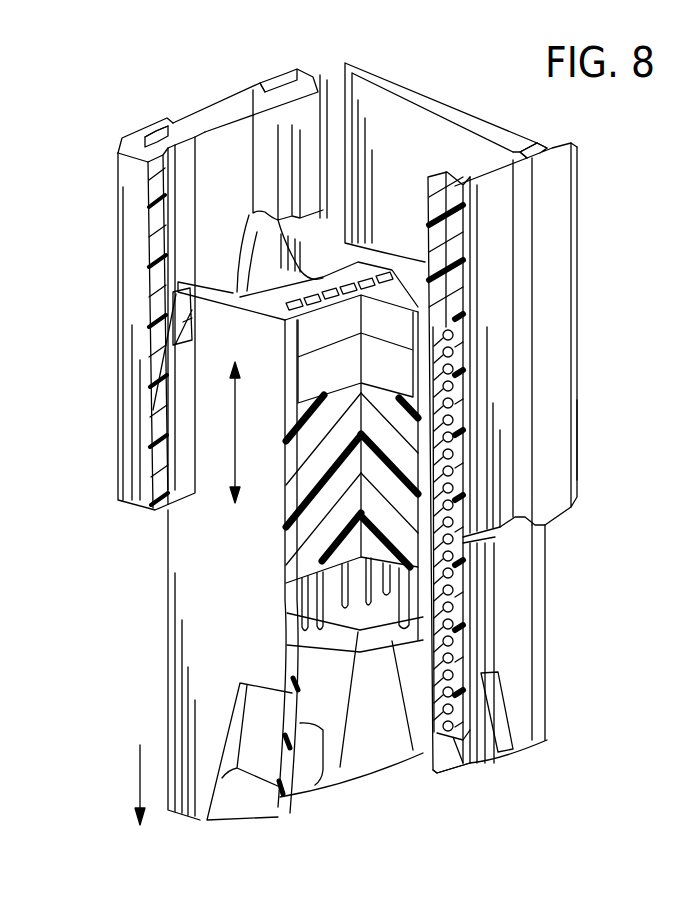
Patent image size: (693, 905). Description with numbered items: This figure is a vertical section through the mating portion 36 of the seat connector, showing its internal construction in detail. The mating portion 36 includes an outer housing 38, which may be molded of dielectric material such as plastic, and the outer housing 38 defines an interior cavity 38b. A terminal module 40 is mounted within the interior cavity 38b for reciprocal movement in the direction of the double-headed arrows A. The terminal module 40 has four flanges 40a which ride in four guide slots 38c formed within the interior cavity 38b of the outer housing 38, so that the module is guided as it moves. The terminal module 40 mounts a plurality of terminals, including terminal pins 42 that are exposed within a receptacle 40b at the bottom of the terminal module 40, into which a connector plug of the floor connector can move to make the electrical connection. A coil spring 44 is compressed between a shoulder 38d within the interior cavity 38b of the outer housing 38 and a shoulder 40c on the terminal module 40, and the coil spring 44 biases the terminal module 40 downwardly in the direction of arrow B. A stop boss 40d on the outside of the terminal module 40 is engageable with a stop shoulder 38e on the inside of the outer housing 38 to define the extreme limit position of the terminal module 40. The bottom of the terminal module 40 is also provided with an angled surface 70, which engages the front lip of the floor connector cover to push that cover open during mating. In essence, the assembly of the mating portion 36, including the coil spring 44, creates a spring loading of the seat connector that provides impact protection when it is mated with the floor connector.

The mating portion 36 is at (597, 462).
The outer housing 38 is at (550, 262).
The interior cavity 38b is at (412, 140).
The guide slots 38c is at (287, 98).
The shoulder 38d is at (460, 373).
The stop shoulder 38e is at (155, 375).
The terminal module 40 is at (207, 548).
The flanges 40a is at (180, 286).
The receptacle 40b is at (323, 730).
The shoulder 40c is at (460, 712).
The stop boss 40d is at (193, 317).
The terminal pins 42 is at (440, 628).
The coil spring 44 is at (460, 573).
The angled surface 70 is at (445, 773).
The double-headed arrows A is at (235, 420).
The arrow B is at (140, 745).